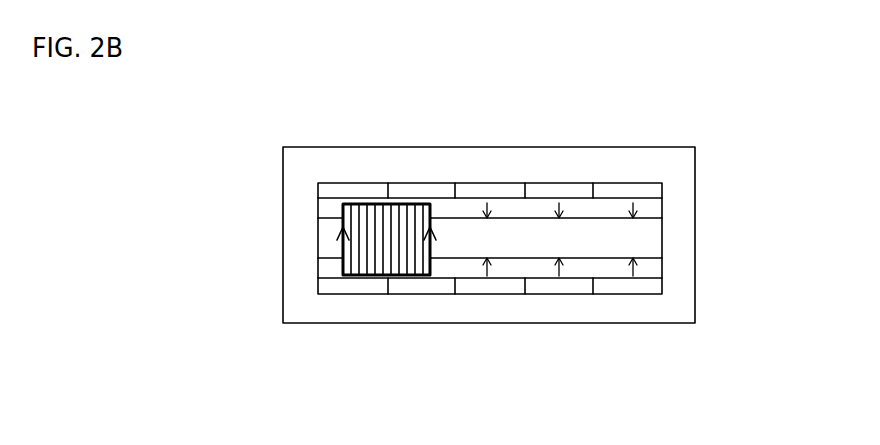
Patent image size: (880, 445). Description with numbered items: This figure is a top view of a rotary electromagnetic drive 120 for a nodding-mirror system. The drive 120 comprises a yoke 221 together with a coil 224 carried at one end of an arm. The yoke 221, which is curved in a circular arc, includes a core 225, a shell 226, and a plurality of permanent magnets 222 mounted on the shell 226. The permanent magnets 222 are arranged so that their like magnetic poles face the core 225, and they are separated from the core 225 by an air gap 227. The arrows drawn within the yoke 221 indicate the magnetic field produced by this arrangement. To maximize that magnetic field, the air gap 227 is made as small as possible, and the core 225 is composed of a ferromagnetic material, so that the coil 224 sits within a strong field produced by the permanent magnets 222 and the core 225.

The rotary electromagnetic drive 120 is at (495, 242).
The yoke 221 is at (698, 180).
The permanent magnet 222 is at (490, 292).
The coil 224 is at (337, 262).
The core 225 is at (638, 253).
The shell 226 is at (582, 180).
The air gap 227 is at (545, 272).